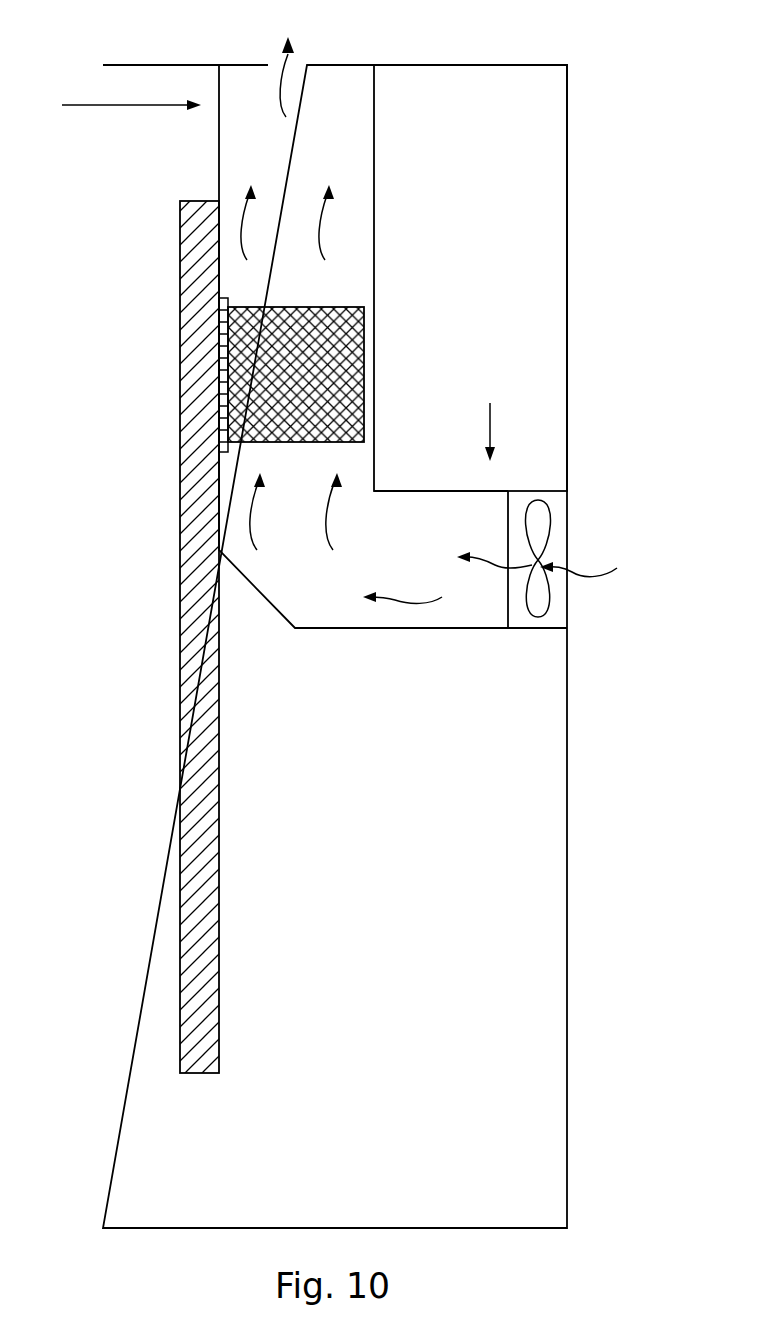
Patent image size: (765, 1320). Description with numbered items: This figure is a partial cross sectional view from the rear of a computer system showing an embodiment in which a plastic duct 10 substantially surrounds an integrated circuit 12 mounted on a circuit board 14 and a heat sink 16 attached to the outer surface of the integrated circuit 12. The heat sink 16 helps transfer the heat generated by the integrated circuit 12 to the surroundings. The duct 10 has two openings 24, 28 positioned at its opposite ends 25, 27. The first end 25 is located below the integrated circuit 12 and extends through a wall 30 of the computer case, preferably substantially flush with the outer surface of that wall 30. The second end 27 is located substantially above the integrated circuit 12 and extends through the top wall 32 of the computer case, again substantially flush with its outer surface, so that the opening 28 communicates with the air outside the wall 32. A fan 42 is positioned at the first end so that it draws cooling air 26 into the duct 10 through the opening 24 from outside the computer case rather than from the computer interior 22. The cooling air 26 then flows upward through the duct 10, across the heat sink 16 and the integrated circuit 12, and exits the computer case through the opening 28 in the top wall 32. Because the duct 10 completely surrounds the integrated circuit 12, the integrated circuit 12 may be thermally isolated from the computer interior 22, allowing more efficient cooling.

The duct 10 is at (412, 491).
The integrated circuit 12 is at (223, 393).
The circuit board 14 is at (200, 250).
The heat sink 16 is at (353, 335).
The computer interior 22 is at (523, 1202).
The opening 24 is at (500, 573).
The first end 25 is at (490, 415).
The cooling air 26 is at (447, 577).
The second end 27 is at (116, 106).
The opening 28 is at (297, 65).
The wall 30 is at (568, 345).
The top wall 32 is at (480, 65).
The fan 42 is at (538, 520).